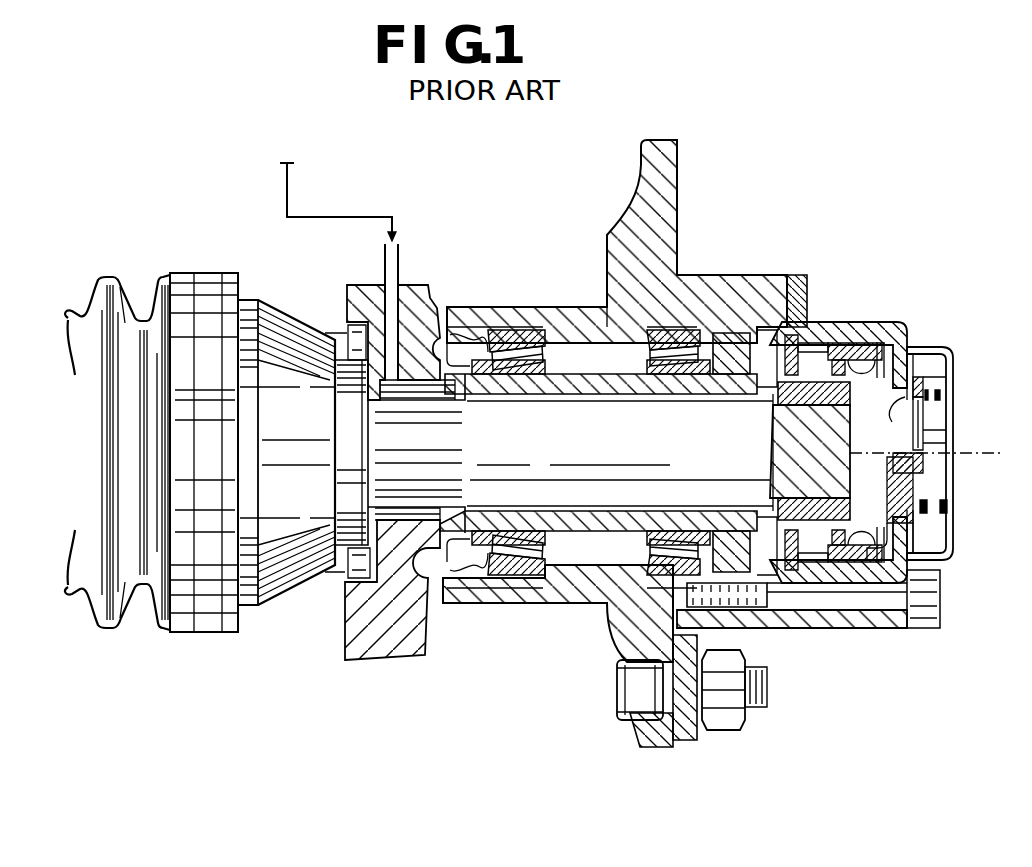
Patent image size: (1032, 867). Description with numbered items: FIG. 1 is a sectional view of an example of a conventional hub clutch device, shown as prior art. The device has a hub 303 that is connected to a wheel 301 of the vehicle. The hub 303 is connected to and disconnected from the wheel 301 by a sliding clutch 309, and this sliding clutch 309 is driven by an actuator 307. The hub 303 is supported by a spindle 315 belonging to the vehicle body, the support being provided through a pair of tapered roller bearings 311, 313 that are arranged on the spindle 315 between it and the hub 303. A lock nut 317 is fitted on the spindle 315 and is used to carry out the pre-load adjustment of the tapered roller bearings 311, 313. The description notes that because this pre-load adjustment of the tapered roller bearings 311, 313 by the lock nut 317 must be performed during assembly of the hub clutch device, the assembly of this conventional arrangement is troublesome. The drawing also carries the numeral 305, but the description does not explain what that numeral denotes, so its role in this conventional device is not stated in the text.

The wheel 301 is at (697, 733).
The hub 303 is at (720, 287).
The shaft 305 is at (765, 461).
The actuator 307 is at (935, 415).
The sliding clutch 309 is at (873, 343).
The tapered roller bearing 311 is at (511, 380).
The tapered roller bearing 313 is at (642, 380).
The spindle 315 is at (561, 380).
The lock nut 317 is at (702, 380).